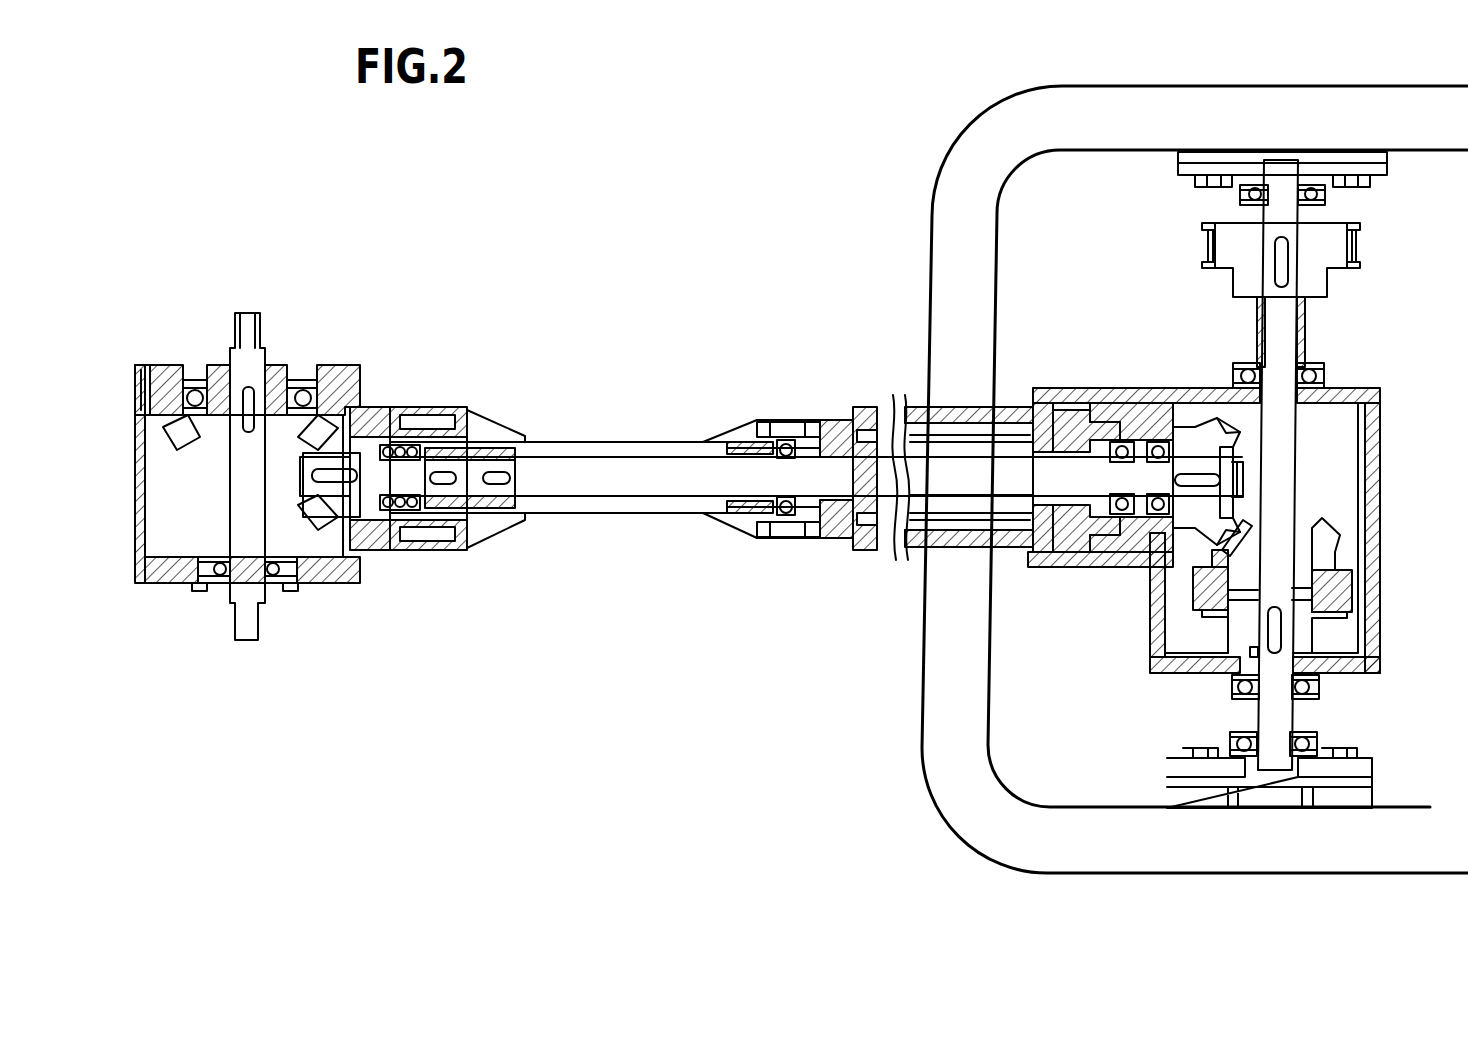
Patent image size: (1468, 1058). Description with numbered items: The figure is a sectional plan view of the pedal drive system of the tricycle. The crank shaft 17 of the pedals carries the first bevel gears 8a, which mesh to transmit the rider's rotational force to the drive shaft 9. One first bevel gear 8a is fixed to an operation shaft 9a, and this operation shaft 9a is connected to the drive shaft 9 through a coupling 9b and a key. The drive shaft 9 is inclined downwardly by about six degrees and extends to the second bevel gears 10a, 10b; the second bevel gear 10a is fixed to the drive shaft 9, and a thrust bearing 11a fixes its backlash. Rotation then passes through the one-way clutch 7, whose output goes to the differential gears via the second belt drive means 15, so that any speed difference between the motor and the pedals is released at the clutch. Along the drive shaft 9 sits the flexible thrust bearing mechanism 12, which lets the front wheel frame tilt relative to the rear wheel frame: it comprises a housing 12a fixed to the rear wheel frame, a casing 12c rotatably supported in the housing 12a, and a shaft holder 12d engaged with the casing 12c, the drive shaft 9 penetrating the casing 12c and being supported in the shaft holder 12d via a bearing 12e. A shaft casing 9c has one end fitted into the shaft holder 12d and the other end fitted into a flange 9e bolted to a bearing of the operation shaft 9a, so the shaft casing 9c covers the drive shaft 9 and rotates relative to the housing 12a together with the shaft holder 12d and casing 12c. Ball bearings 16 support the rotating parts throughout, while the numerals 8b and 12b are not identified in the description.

The one-way clutch 7 is at (1232, 675).
The first bevel gear 8a is at (340, 503).
The gear housing 8b is at (217, 393).
The drive shaft 9 is at (605, 487).
The operation shaft 9a is at (367, 483).
The coupling 9b is at (489, 413).
The shaft casing 9c is at (655, 440).
The flange 9e is at (466, 410).
The second bevel gear 10a is at (1185, 425).
The second bevel gear 10b is at (1078, 568).
The thrust bearing 11a is at (1118, 513).
The flexible thrust bearing mechanism 12 is at (807, 560).
The housing 12a is at (852, 408).
The tube 12b is at (902, 548).
The casing 12c is at (836, 540).
The flexible thrust bearing mechanism shaft holder 12d is at (830, 418).
The bearing 12e is at (767, 427).
The second belt drive means 15 is at (1200, 233).
The ball bearing 16 is at (1103, 447).
The crank shaft 17 is at (265, 333).